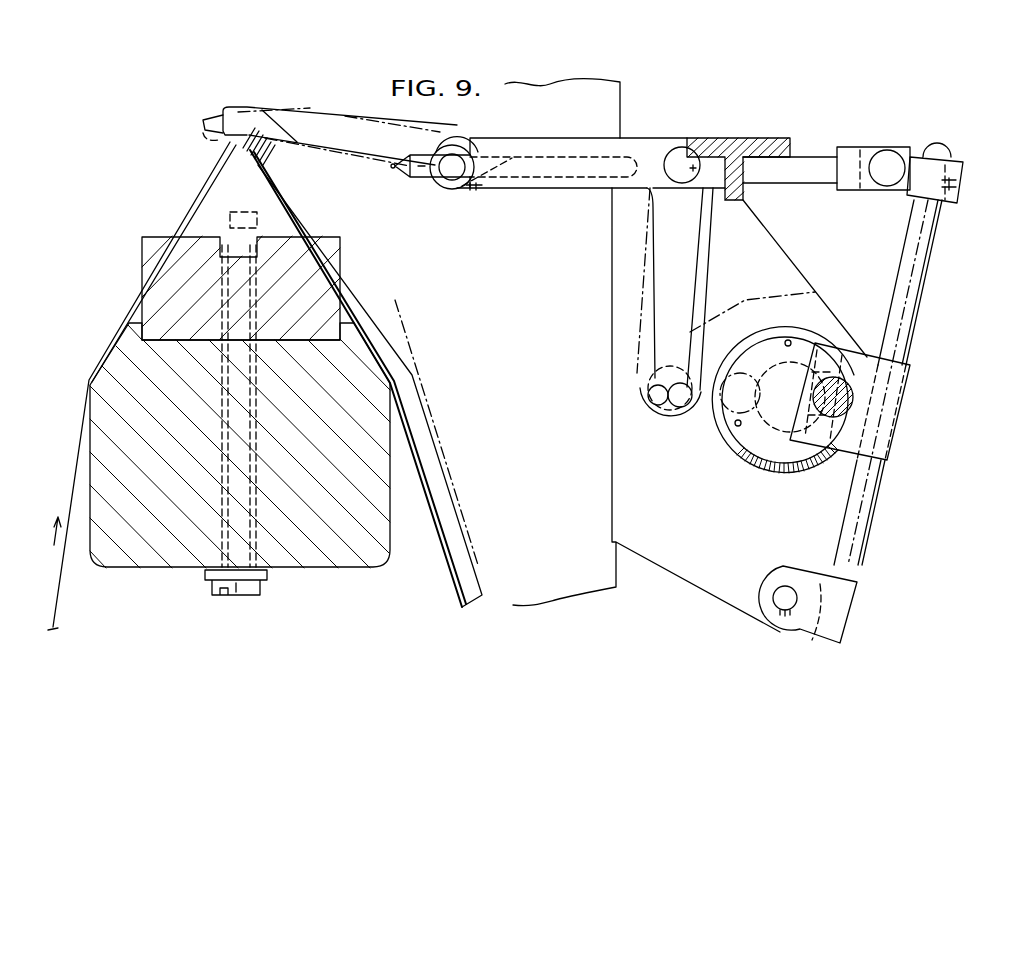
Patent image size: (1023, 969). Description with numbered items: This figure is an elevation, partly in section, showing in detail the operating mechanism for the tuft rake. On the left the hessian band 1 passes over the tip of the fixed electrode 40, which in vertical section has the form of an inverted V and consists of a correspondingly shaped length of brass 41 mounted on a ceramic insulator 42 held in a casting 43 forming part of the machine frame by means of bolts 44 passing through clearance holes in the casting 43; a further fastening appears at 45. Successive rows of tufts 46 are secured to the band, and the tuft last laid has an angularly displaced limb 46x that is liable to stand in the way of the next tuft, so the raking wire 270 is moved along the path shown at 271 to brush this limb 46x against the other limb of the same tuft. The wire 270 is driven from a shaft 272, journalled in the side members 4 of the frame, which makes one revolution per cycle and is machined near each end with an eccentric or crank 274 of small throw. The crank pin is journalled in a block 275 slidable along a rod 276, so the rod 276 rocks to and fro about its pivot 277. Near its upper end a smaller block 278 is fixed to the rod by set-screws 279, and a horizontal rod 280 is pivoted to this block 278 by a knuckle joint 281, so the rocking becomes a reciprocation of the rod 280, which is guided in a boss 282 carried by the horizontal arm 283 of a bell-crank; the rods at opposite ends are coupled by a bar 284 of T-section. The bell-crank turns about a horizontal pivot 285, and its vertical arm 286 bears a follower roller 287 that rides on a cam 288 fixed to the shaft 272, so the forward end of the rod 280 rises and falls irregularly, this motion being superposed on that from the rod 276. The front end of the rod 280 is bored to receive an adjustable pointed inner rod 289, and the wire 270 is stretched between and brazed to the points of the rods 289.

The hessian band 1 is at (73, 473).
The side members 4 is at (685, 563).
The fixed electrode 40 is at (165, 234).
The length of brass 41 is at (267, 213).
The ceramic insulator 42 is at (170, 290).
The casting 43 is at (337, 377).
The bolts 44 is at (230, 487).
The bolt 45 is at (253, 540).
The tufts 46 is at (277, 157).
The angularly displaced limb 46x is at (240, 140).
The wire 270 is at (387, 172).
The path 271 is at (340, 132).
The shaft 272 is at (752, 460).
The eccentric or crank 274 is at (723, 420).
The blocks 275 is at (890, 443).
The rods 276 is at (913, 312).
The pivots 277 is at (777, 600).
The smaller block 278 is at (950, 158).
The set-screws 279 is at (957, 190).
The horizontal rod 280 is at (555, 184).
The knuckle joint 281 is at (887, 160).
The bosses 282 is at (444, 126).
The horizontal arm 283 is at (548, 150).
The bar of T-section 284 is at (753, 139).
The horizontal pivots 285 is at (673, 148).
The vertical arms 286 is at (653, 327).
The follower rollers 287 is at (650, 413).
The cams 288 is at (803, 300).
The inner rods 289 is at (480, 185).